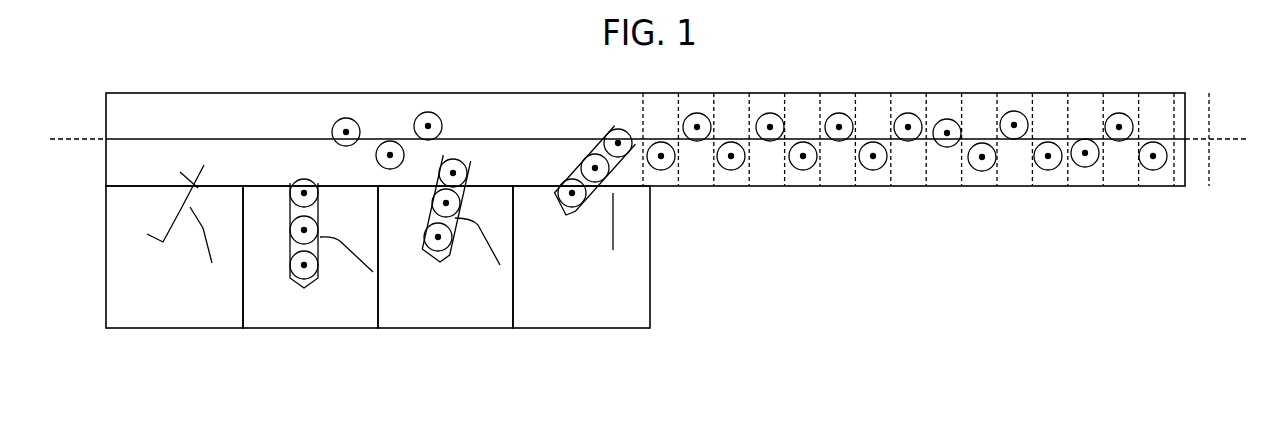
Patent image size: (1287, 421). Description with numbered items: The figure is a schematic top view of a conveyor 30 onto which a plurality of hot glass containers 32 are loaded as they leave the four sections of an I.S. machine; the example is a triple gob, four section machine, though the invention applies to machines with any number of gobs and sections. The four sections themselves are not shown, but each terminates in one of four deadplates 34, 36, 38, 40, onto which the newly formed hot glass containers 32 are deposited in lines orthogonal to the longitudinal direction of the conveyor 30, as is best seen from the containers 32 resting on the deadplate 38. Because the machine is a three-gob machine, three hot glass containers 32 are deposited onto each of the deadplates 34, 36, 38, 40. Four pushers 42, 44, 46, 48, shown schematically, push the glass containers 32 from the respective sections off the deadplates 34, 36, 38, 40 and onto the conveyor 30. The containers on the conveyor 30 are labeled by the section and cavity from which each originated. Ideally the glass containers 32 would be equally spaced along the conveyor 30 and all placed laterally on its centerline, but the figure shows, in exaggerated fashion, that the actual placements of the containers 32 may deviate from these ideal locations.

The conveyor 30 is at (528, 92).
The hot glass containers 32 is at (417, 117).
The deadplate 34 is at (570, 329).
The deadplate 36 is at (460, 329).
The deadplate 38 is at (325, 329).
The deadplate 40 is at (190, 329).
The pusher 42 is at (613, 220).
The pusher 44 is at (457, 222).
The pusher 46 is at (320, 248).
The pusher 48 is at (167, 203).